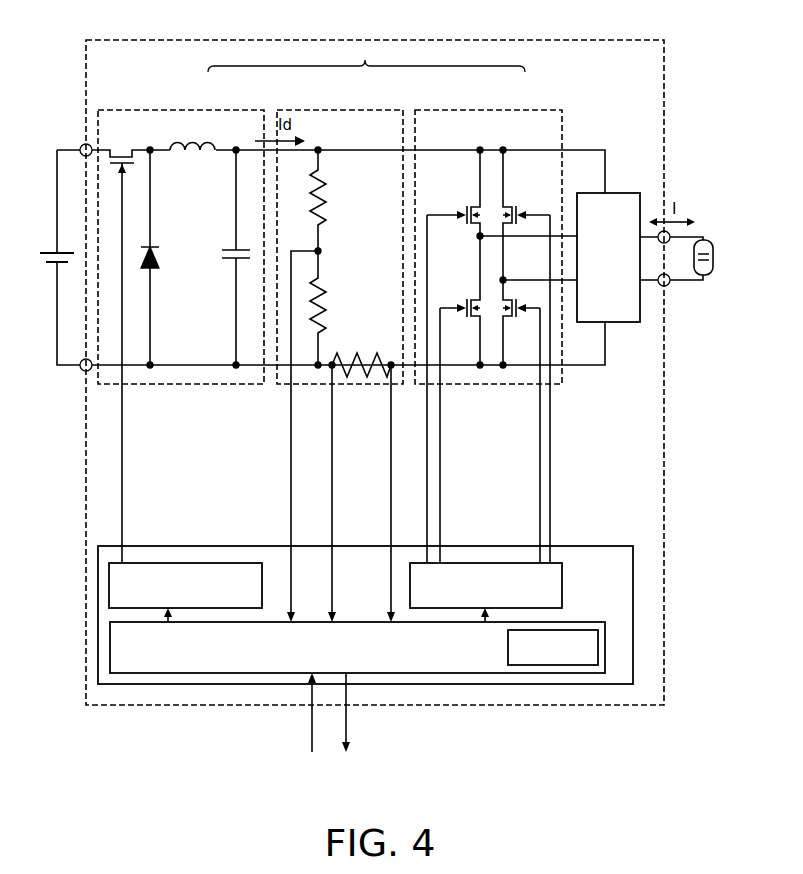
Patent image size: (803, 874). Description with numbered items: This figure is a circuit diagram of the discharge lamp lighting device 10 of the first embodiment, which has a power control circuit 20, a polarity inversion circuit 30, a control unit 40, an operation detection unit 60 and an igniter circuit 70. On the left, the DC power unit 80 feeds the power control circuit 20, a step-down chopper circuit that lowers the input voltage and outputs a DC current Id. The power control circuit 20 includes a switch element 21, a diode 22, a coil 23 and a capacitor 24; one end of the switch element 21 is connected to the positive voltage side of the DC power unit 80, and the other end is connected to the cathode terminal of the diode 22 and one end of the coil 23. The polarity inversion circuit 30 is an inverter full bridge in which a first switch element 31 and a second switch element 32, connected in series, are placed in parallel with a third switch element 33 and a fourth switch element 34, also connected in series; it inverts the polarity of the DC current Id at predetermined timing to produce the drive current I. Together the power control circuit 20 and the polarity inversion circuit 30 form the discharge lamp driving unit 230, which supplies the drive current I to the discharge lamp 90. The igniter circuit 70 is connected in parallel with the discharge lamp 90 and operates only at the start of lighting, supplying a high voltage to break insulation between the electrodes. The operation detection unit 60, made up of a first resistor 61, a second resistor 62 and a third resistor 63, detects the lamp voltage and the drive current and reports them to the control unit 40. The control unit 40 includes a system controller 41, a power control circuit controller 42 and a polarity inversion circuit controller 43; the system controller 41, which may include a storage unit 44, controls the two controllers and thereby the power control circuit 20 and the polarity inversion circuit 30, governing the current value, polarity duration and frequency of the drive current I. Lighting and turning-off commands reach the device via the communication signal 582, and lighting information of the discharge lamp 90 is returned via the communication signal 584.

The discharge lamp lighting device 10 is at (548, 40).
The power control circuit 20 is at (215, 110).
The switch element 21 is at (121, 150).
The diode 22 is at (160, 257).
The coil 23 is at (203, 138).
The capacitor 24 is at (242, 257).
The polarity inversion circuit 30 is at (497, 110).
The first switch element 31 is at (453, 377).
The second switch element 32 is at (460, 423).
The third switch element 33 is at (526, 377).
The fourth switch element 34 is at (521, 423).
The control unit 40 is at (453, 548).
The system controller 41 is at (587, 622).
The power control circuit controller 42 is at (208, 563).
The polarity inversion circuit controller 43 is at (560, 563).
The storage unit 44 is at (598, 636).
The operation detection unit 60 is at (350, 386).
The first resistor 61 is at (333, 199).
The second resistor 62 is at (333, 308).
The third resistor 63 is at (361, 353).
The igniter circuit 70 is at (630, 193).
The DC power unit 80 is at (48, 251).
The discharge lamp 90 is at (710, 241).
The discharge lamp driving unit 230 is at (366, 57).
The communication signal 582 is at (312, 727).
The communication signal 584 is at (346, 727).